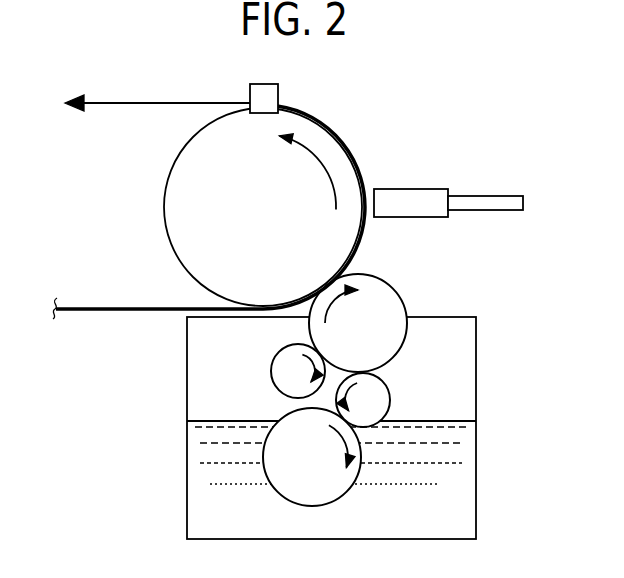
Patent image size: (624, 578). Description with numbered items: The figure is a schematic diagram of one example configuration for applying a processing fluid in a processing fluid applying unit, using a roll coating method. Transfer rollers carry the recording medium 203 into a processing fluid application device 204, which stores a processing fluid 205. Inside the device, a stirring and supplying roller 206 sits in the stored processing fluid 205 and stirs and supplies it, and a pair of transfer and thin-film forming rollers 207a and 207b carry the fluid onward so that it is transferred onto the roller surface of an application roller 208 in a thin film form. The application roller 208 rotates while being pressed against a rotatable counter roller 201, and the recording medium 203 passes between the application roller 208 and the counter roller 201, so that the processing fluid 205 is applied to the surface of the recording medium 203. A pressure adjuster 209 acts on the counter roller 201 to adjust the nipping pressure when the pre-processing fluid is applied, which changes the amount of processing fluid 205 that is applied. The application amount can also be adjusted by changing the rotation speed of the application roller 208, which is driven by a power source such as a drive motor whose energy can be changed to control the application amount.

The rotatable counter roller 201 is at (175, 160).
The recording medium 203 is at (337, 131).
The processing fluid application device 204 is at (187, 445).
The processing fluid 205 is at (476, 503).
The stirring and supplying roller 206 is at (280, 493).
The transfer and thin-film forming roller 207a is at (390, 390).
The transfer and thin-film forming roller 207b is at (271, 365).
The application roller 208 is at (400, 288).
The pressure adjuster 209 is at (418, 189).